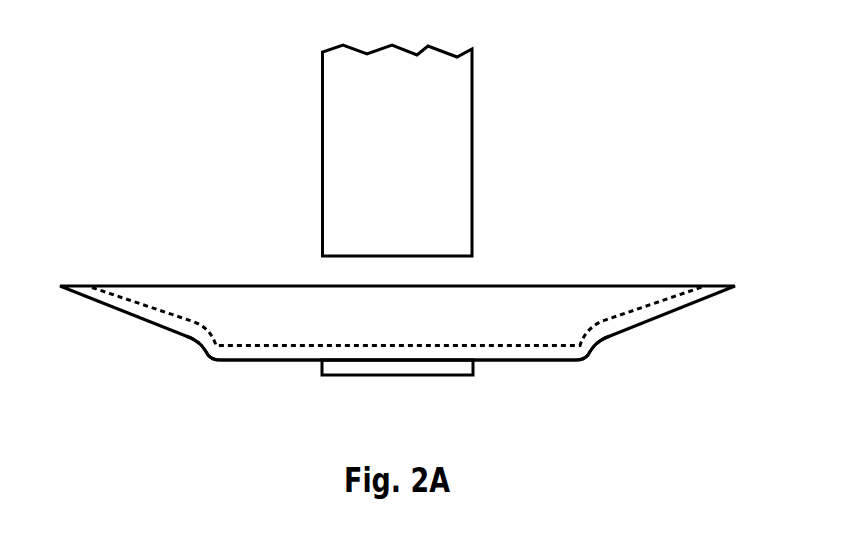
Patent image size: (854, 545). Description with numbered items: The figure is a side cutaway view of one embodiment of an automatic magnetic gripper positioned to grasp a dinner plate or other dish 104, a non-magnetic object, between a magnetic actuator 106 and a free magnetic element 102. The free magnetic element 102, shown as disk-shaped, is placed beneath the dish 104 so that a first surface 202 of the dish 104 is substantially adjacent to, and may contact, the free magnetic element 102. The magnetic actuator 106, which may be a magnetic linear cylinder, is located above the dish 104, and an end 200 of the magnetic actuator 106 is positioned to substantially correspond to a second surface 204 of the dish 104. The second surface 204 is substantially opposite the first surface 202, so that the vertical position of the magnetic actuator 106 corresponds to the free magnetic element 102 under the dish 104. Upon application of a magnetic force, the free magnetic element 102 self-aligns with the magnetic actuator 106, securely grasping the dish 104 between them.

The free magnetic element 102 is at (405, 375).
The dish 104 is at (212, 295).
The magnetic actuator 106 is at (414, 165).
The end of the magnetic actuator 200 is at (397, 256).
The first surface of the dish 202 is at (267, 360).
The second surface of the dish 204 is at (508, 342).